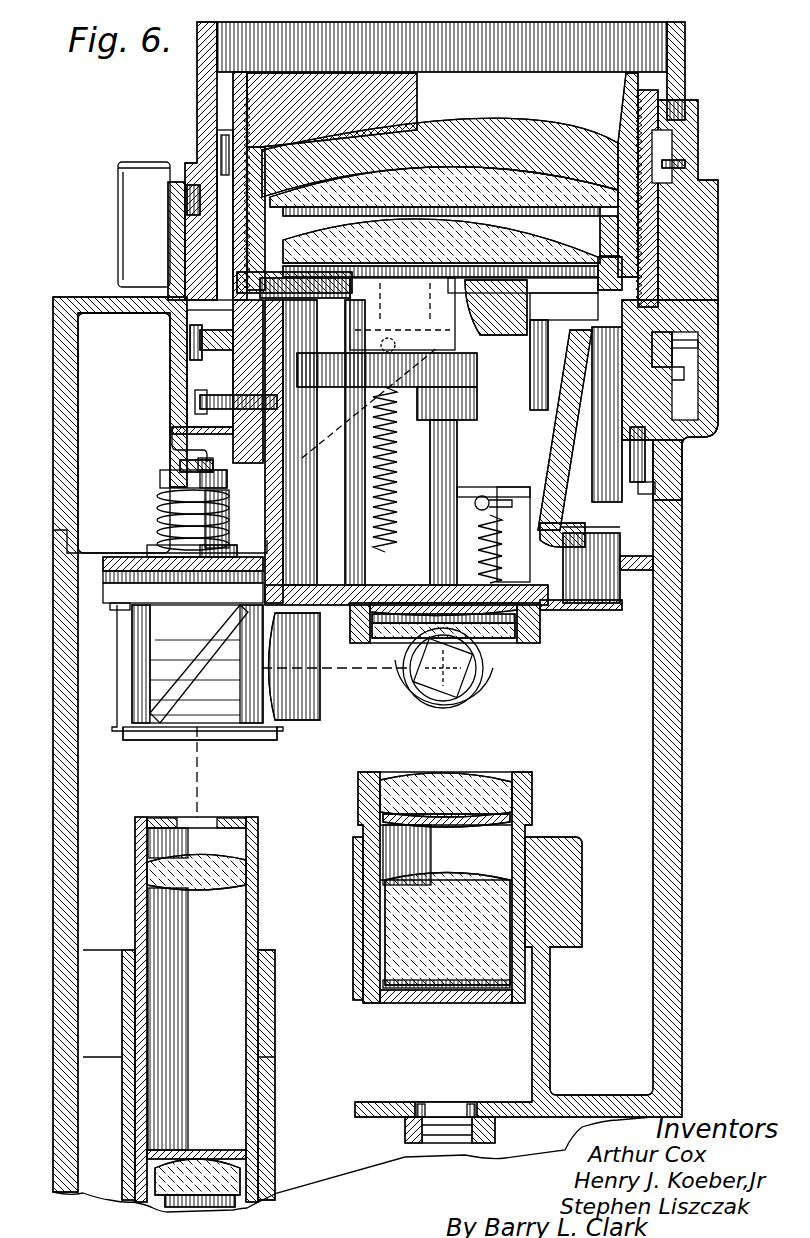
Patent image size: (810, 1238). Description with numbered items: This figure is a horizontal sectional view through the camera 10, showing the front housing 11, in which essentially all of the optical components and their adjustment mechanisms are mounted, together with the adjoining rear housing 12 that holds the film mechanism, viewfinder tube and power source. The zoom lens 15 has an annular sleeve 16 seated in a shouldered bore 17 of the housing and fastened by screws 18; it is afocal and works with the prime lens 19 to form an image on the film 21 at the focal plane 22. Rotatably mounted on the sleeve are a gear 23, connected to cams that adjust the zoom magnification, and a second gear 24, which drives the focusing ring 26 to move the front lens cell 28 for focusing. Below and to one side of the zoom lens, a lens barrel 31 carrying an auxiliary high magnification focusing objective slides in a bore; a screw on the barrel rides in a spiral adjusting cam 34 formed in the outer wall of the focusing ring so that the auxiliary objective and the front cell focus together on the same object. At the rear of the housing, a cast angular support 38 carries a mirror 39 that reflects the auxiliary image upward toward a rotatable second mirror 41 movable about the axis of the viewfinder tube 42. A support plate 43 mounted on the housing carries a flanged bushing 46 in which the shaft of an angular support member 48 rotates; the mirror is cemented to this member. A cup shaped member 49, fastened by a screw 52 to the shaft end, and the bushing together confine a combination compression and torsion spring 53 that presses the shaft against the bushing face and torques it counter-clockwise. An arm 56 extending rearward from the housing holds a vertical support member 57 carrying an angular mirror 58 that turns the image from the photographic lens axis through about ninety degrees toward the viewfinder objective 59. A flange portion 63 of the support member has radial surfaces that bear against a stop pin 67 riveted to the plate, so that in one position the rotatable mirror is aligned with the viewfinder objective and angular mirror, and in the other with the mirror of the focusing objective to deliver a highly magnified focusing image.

The camera 10 is at (687, 743).
The front housing 11 is at (716, 376).
The rear housing 12 is at (672, 873).
The zoom lens 15 is at (692, 133).
The annular sleeve 16 is at (697, 333).
The shouldered bore 17 is at (648, 463).
The screws 18 is at (655, 490).
The prime lens 19 is at (543, 810).
The film 21 is at (418, 1143).
The focal plane 22 is at (445, 1133).
The gear 23 is at (698, 402).
The gear 24 is at (695, 347).
The focusing ring 26 is at (688, 68).
The front lens cell 28 is at (233, 115).
The lens barrel 31 is at (123, 192).
The spiral adjusting cam 34 is at (192, 200).
The cast angular support 38 is at (117, 725).
The mirror 39 is at (217, 708).
The rotatable second mirror 41 is at (163, 693).
The viewfinder tube 42 is at (260, 850).
The support plate 43 is at (120, 557).
The flanged bushing 46 is at (153, 547).
The angular support member 48 is at (160, 625).
The cup shaped member 49 is at (173, 472).
The screw 52 is at (187, 457).
The combination compression and torsion spring 53 is at (160, 500).
The arm 56 is at (492, 670).
The vertical support member 57 is at (467, 688).
The angular mirror 58 is at (442, 687).
The viewfinder objective 59 is at (297, 723).
The flange portion 63 is at (115, 592).
The stop pin 67 is at (110, 607).